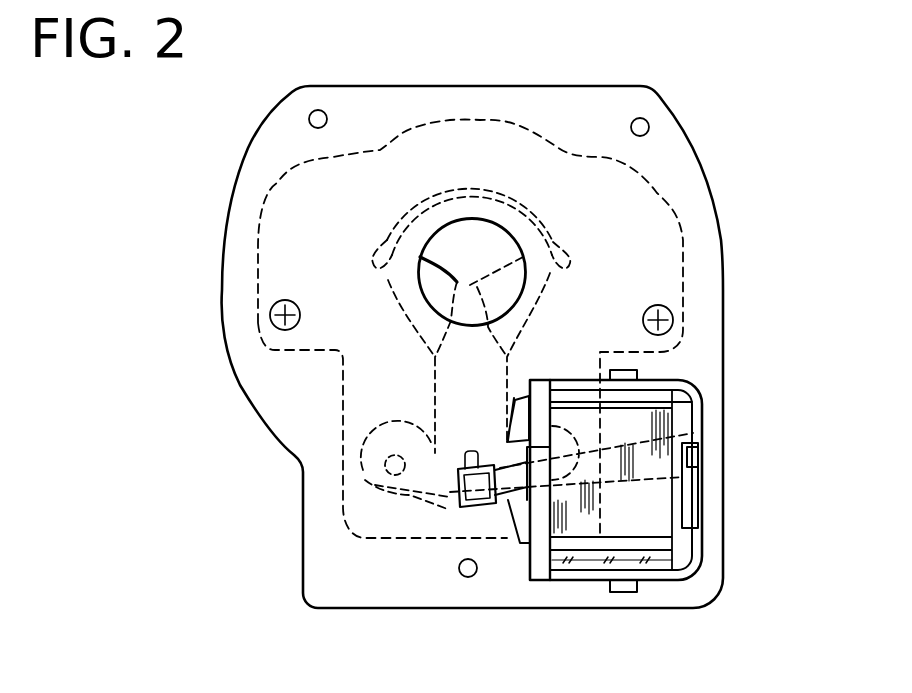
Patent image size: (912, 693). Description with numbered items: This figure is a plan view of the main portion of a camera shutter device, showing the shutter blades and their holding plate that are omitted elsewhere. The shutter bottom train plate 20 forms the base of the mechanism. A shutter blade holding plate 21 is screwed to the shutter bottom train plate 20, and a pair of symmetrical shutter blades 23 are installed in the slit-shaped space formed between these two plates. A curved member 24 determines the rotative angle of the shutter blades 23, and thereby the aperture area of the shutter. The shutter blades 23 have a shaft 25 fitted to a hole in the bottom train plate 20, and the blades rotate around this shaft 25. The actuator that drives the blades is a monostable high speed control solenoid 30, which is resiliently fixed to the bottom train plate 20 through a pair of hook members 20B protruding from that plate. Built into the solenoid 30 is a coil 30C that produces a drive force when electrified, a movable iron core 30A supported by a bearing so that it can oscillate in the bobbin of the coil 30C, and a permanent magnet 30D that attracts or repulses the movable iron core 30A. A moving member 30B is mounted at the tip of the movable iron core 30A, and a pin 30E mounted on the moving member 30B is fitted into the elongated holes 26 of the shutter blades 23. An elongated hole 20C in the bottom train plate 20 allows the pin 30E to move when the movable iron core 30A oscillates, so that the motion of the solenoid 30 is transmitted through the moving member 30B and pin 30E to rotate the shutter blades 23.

The bottom train plate 20 is at (476, 87).
The hook members 20B is at (638, 374).
The elongated hole 20C is at (488, 515).
The shutter blade holding plate 21 is at (600, 157).
The shutter blades 23 is at (417, 197).
The curved member 24 is at (344, 301).
The shaft 25 is at (385, 466).
The elongated holes 26 is at (458, 480).
The monostable high speed control solenoid 30 is at (593, 589).
The movable iron core 30A is at (628, 484).
The moving member 30B is at (476, 452).
The coil 30C is at (623, 422).
The permanent magnet 30D is at (645, 558).
The pin 30E is at (480, 507).